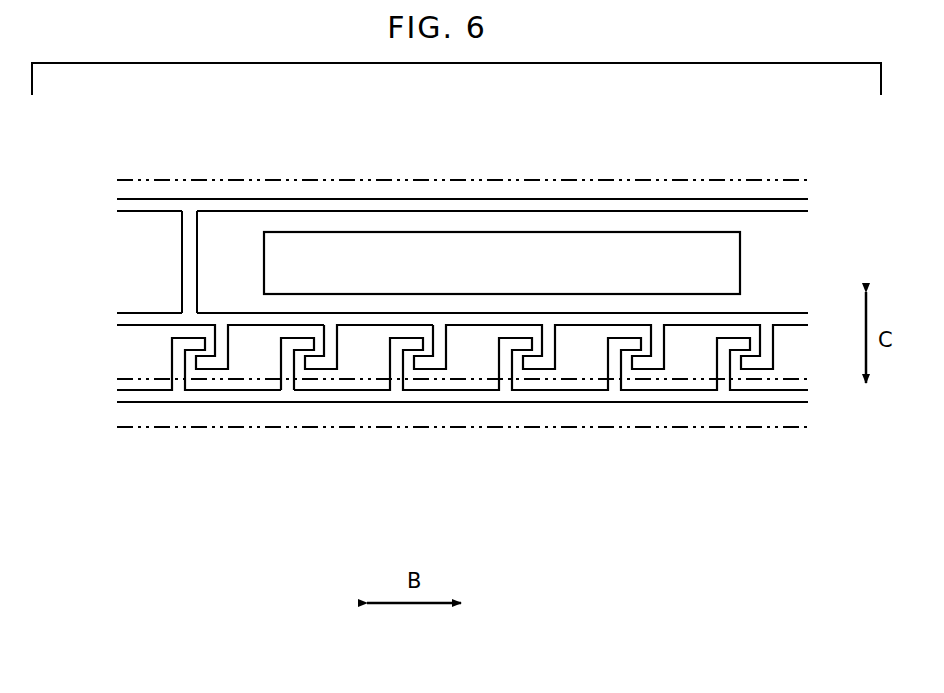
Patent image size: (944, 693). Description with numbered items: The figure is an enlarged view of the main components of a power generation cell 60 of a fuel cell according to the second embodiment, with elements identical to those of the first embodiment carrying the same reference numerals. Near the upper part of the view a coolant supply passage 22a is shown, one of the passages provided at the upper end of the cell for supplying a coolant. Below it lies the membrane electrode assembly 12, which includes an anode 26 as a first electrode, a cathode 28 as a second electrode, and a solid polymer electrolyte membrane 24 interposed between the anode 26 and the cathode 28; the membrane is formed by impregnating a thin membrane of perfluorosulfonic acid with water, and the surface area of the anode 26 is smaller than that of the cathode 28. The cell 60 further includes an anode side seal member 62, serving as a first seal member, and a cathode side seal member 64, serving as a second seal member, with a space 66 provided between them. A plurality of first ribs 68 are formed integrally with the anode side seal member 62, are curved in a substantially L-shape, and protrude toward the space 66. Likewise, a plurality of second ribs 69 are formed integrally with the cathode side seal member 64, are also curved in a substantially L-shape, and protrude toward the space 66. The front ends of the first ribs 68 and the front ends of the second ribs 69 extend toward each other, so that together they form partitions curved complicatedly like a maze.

The power generation cell 60 is at (594, 150).
The membrane electrode assembly 12 is at (125, 378).
The coolant supply passage 22a is at (502, 263).
The cathode side seal member 64 is at (750, 310).
The second rib 69 is at (344, 350).
The anode side seal member 62 is at (600, 403).
The first rib 68 is at (287, 358).
The space 66 is at (469, 364).
The solid polymer electrolyte membrane 24 is at (722, 432).
The cathode 28 is at (462, 476).
The anode 26 is at (464, 518).